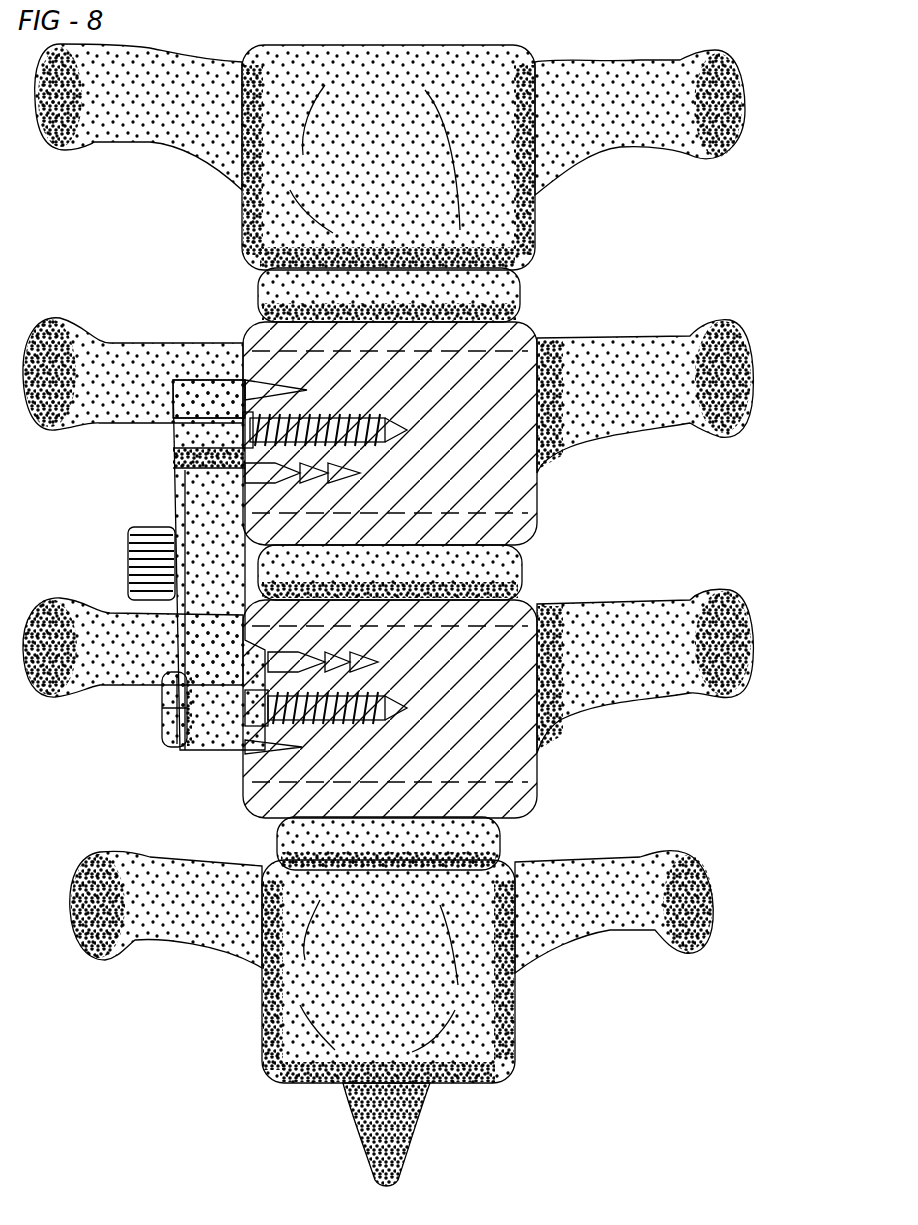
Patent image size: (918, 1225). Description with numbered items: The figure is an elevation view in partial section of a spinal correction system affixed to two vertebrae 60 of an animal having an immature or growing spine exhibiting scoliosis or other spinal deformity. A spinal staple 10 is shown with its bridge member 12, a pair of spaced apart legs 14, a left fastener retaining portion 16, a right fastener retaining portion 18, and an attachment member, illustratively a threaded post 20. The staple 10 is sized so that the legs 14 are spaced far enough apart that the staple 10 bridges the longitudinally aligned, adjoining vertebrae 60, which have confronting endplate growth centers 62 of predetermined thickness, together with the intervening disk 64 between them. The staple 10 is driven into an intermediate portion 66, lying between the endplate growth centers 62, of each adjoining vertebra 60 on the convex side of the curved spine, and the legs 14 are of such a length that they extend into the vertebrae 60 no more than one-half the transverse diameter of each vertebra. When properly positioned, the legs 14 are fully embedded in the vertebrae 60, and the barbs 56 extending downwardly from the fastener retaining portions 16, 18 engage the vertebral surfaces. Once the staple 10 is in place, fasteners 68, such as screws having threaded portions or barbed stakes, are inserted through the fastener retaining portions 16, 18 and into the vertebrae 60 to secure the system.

The spinal staple 10 is at (130, 545).
The bridge member 12 is at (197, 500).
The legs 14 is at (340, 472).
The left fastener retaining portion 16 is at (205, 755).
The right fastener retaining portion 18 is at (203, 388).
The threaded post 20 is at (135, 578).
The barbs 56 is at (273, 388).
The vertebrae 60 is at (535, 213).
The endplate growth centers 62 is at (522, 325).
The intervening disk 64 is at (520, 290).
The intermediate portion 66 is at (510, 460).
The fasteners 68 is at (413, 405).